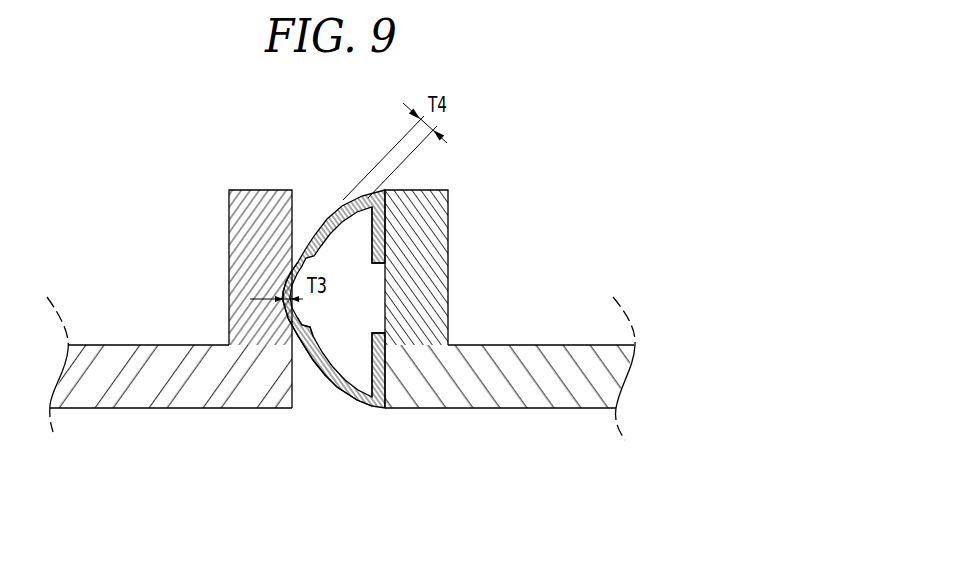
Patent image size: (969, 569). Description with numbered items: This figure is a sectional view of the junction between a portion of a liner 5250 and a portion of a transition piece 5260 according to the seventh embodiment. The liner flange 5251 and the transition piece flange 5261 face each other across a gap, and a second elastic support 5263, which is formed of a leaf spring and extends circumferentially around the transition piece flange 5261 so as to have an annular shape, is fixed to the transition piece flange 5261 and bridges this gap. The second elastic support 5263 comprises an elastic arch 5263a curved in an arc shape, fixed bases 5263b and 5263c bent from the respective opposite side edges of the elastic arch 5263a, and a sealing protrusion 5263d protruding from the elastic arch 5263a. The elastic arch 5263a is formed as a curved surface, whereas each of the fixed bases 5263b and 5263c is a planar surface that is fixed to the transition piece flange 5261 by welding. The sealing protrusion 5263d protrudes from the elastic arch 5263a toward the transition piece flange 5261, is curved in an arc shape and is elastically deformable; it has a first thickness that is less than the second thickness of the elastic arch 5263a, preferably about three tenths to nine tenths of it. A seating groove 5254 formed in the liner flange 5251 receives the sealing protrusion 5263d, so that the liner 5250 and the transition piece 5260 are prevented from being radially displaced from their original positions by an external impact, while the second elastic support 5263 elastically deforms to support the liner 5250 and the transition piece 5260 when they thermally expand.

The liner 5250 is at (189, 416).
The liner flange 5251 is at (229, 232).
The seating groove 5254 is at (289, 284).
The transition piece 5260 is at (489, 416).
The transition piece flange 5261 is at (448, 232).
The second elastic support 5263 is at (317, 197).
The elastic arch 5263a is at (330, 377).
The fixed base 5263b is at (378, 230).
The fixed base 5263c is at (374, 362).
The sealing protrusion 5263d is at (310, 322).